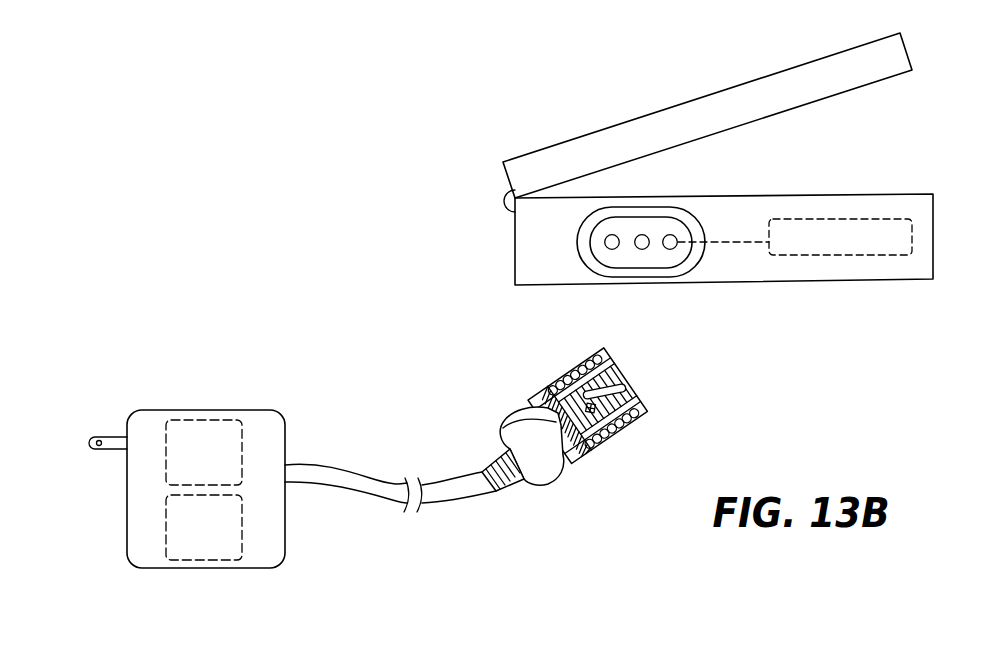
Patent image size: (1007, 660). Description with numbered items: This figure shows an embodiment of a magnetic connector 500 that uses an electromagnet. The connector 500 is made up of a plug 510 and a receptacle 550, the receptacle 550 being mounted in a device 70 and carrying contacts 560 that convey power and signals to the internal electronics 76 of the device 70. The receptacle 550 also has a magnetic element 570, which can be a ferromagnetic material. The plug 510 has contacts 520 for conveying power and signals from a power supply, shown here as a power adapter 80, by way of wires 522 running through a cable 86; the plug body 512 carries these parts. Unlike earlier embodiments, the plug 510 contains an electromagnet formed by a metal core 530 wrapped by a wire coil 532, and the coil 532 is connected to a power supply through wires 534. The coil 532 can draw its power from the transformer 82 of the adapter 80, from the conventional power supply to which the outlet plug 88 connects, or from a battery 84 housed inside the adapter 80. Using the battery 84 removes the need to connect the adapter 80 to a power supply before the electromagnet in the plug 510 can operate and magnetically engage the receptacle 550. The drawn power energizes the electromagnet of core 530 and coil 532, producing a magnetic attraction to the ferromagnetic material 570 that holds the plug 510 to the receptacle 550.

The device 70 is at (569, 111).
The internal electronics 76 is at (857, 218).
The power adapter 80 is at (236, 410).
The transformer 82 is at (204, 452).
The battery 84 is at (204, 527).
The cable 86 is at (367, 496).
The outlet plug 88 is at (115, 432).
The magnetic connector 500 is at (466, 283).
The plug 510 is at (481, 364).
The plug body 512 is at (547, 487).
The contacts 520 is at (618, 384).
The wires 522 is at (513, 414).
The metal core 530 is at (648, 413).
The wire coil 532 is at (588, 444).
The wires 534 is at (567, 462).
The receptacle 550 is at (585, 271).
The contacts 560 is at (672, 233).
The magnetic element 570 is at (645, 278).